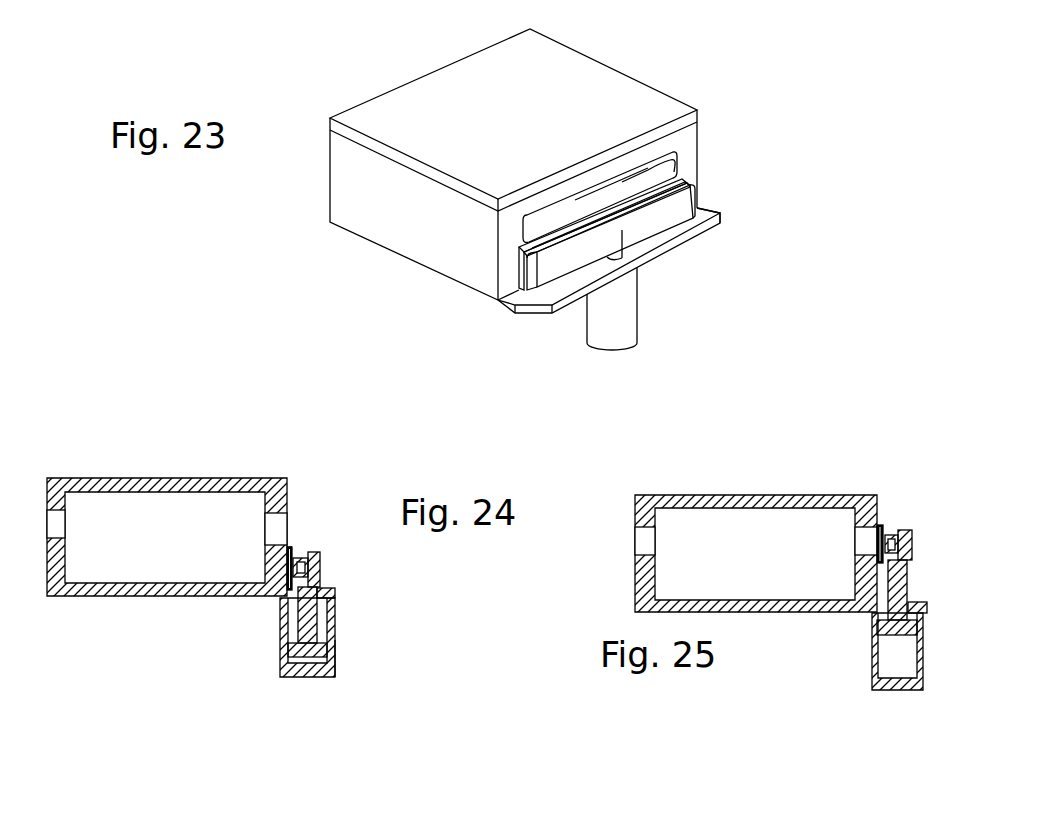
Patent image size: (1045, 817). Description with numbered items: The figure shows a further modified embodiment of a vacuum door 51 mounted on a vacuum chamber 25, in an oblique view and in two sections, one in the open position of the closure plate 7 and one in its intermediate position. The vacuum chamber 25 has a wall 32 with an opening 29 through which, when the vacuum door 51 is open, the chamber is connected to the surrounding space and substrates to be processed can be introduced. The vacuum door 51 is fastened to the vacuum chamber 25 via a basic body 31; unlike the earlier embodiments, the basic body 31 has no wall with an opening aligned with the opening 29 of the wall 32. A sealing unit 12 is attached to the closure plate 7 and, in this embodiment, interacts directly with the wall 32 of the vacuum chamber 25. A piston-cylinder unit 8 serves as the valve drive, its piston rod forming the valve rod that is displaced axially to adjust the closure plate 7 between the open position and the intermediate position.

In FIG. 23, the closure plate 7 is at (652, 231).
In FIG. 24, the closure plate 7 is at (298, 553).
In FIG. 25, the closure plate 7 is at (897, 582).
In FIG. 23, the piston-cylinder unit 8 is at (653, 323).
In FIG. 24, the piston-cylinder unit 8 is at (339, 653).
In FIG. 23, the sealing unit 12 is at (516, 269).
In FIG. 24, the sealing unit 12 is at (294, 546).
In FIG. 23, the vacuum chamber 25 is at (338, 232).
In FIG. 24, the vacuum chamber 25 is at (117, 612).
In FIG. 25, the vacuum chamber 25 is at (783, 491).
In FIG. 23, the opening 29 is at (647, 170).
In FIG. 24, the opening 29 is at (275, 528).
In FIG. 25, the opening 29 is at (865, 543).
In FIG. 23, the basic body 31 is at (712, 209).
In FIG. 24, the basic body 31 is at (339, 595).
In FIG. 25, the basic body 31 is at (917, 607).
In FIG. 23, the wall 32 is at (510, 217).
In FIG. 24, the wall 32 is at (281, 565).
In FIG. 25, the wall 32 is at (867, 580).
In FIG. 23, the vacuum door 51 is at (737, 222).
In FIG. 24, the vacuum door 51 is at (302, 684).
In FIG. 25, the vacuum door 51 is at (896, 701).